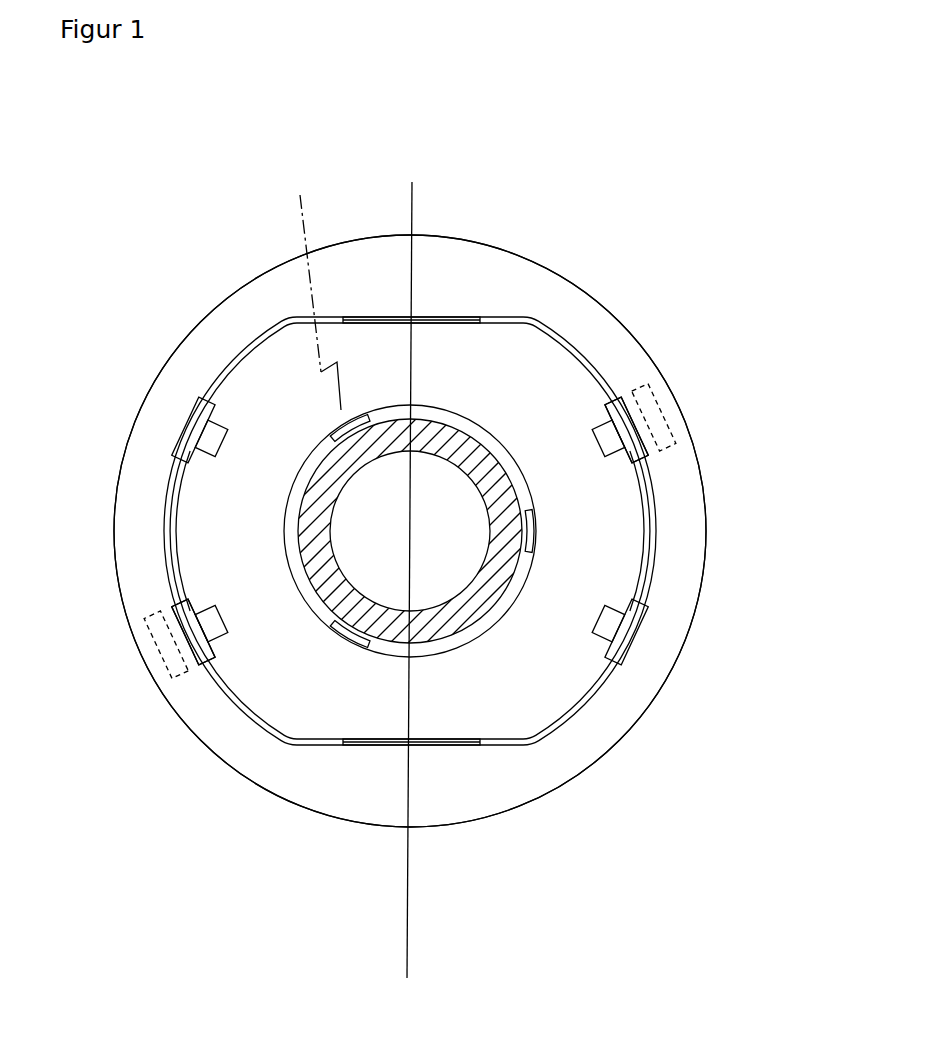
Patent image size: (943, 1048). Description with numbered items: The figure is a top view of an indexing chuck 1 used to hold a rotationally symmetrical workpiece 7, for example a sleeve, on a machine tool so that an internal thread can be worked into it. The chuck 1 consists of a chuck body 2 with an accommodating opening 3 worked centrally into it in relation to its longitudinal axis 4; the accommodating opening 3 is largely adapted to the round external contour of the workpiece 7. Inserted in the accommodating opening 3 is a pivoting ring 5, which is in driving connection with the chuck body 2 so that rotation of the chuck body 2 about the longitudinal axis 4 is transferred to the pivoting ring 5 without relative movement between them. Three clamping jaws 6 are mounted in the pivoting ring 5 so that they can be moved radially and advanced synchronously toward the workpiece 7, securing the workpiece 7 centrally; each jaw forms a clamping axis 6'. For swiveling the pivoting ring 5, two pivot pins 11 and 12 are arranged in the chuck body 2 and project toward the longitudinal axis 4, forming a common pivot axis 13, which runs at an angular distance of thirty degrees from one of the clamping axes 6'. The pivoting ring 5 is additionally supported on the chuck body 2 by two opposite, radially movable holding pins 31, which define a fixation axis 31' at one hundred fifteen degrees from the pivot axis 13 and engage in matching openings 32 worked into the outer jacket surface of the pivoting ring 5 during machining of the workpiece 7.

The indexing chuck 1 is at (672, 96).
The chuck body 2 is at (484, 252).
The accommodating opening 3 is at (579, 713).
The longitudinal axis 4 is at (617, 615).
The pivoting ring 5 is at (608, 575).
The clamping jaw 6 is at (473, 543).
The clamping axis 6' is at (404, 383).
The workpiece 7 is at (322, 492).
The pivot pin 11 is at (427, 318).
The pivot pin 12 is at (425, 743).
The pivot axis 13 is at (410, 890).
The holding pin 31 is at (386, 514).
The fixation axis 31' is at (483, 482).
The opening 32 is at (208, 430).